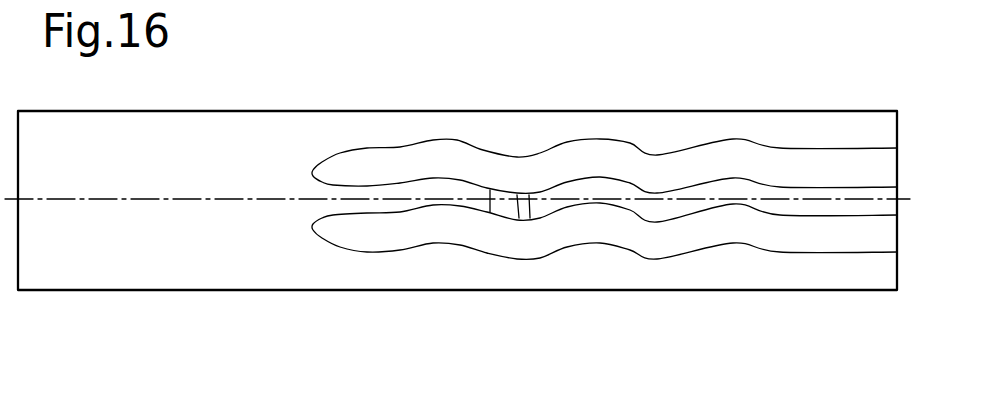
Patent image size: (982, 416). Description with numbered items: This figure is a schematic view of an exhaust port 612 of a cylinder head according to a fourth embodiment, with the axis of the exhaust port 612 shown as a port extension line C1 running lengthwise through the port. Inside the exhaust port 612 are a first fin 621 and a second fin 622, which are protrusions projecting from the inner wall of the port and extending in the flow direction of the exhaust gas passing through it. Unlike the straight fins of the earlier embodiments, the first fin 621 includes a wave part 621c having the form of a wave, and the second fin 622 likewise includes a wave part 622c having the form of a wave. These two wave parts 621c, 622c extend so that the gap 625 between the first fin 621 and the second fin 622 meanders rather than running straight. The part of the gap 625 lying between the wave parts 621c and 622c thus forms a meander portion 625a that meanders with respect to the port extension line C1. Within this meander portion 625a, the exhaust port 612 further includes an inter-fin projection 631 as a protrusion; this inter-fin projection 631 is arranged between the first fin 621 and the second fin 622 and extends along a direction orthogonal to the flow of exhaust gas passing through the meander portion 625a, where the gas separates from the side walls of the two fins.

The exhaust port 612 is at (628, 103).
The port extension line C1 is at (161, 198).
The first fin 621 is at (340, 172).
The second fin 622 is at (340, 228).
The gap 625 is at (422, 190).
The wave part 621c is at (550, 167).
The wave part 622c is at (538, 247).
The meander portion 625a is at (550, 205).
The inter-fin projection 631 is at (523, 218).